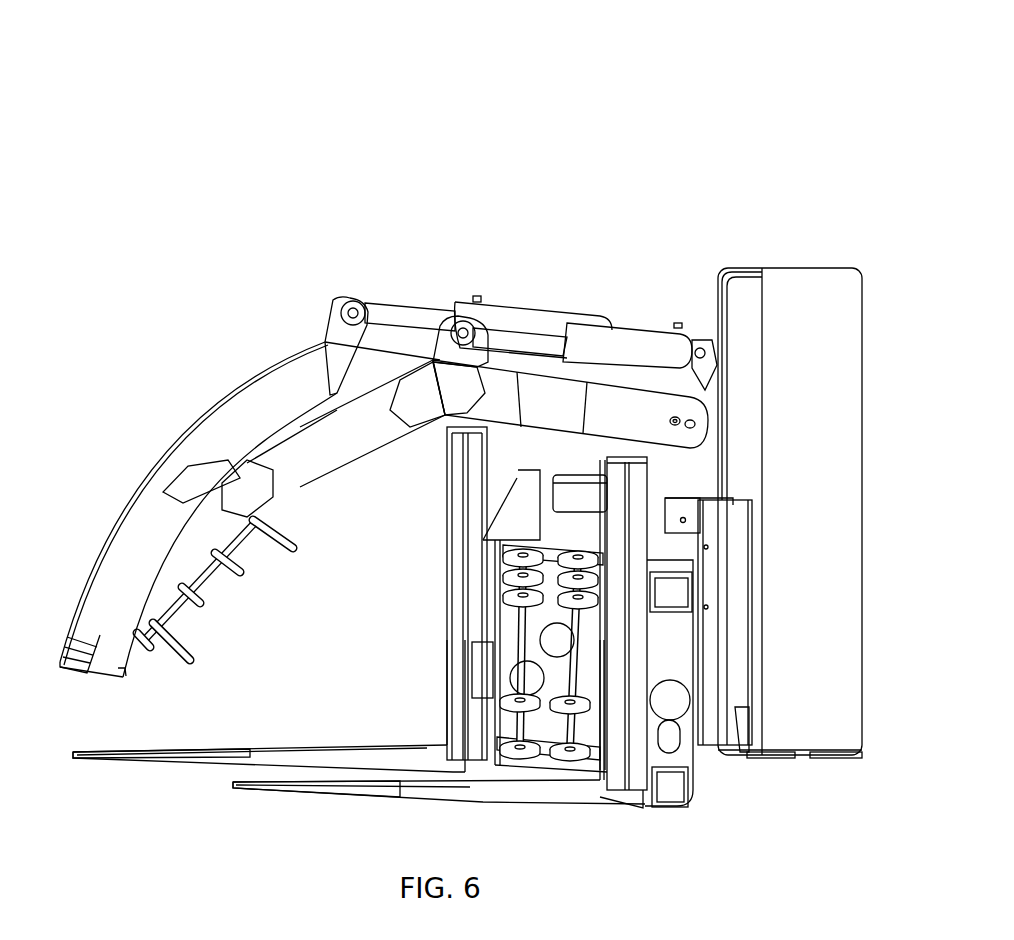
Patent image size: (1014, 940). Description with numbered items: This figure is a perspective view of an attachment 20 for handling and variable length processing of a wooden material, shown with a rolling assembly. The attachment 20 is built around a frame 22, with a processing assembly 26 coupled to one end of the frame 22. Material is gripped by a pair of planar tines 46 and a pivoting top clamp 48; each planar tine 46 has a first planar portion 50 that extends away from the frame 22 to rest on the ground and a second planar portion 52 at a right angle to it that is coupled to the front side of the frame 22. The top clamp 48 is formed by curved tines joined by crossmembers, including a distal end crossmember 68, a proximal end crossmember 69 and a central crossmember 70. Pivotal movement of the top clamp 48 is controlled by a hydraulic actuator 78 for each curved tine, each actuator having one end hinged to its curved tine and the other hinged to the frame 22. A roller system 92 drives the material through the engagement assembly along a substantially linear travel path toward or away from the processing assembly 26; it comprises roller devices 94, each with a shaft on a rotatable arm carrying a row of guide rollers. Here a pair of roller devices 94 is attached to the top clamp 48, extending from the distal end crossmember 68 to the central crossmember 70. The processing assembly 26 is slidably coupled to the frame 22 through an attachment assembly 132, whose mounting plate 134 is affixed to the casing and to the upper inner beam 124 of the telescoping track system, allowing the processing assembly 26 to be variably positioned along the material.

The attachment 20 is at (242, 112).
The frame 22 is at (483, 577).
The processing assembly 26 is at (812, 310).
The planar tines 46 is at (428, 750).
The top clamp 48 is at (288, 390).
The first planar portion 50 is at (183, 758).
The second planar portion 52 is at (632, 742).
The distal end crossmember 68 is at (78, 645).
The proximal end crossmember 69 is at (333, 315).
The central crossmember 70 is at (187, 467).
The hydraulic actuator 78 is at (507, 313).
The roller system 92 is at (540, 767).
The roller device 94 is at (270, 523).
The upper inner beam 124 is at (714, 488).
The attachment assembly 132 is at (712, 536).
The mounting plate 134 is at (712, 599).